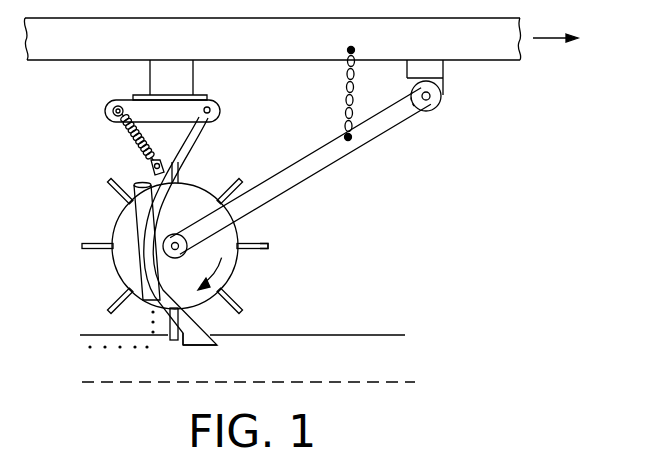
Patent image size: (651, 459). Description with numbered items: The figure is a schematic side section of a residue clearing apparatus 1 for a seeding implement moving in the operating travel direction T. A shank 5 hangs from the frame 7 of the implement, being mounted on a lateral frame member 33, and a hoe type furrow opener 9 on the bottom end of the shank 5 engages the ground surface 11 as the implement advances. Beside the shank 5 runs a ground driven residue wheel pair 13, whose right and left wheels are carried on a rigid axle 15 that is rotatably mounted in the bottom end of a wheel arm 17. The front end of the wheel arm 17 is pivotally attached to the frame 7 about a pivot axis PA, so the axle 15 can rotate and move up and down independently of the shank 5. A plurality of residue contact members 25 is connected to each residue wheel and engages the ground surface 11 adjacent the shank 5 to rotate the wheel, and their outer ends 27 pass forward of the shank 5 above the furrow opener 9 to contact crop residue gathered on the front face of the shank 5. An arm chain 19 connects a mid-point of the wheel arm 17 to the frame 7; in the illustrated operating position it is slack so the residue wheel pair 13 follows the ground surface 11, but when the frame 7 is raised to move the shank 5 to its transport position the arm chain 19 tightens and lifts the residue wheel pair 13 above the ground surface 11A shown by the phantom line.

The residue clearing apparatus 1 is at (316, 258).
The shank 5 is at (191, 134).
The frame 7 is at (500, 61).
The hoe type furrow opener 9 is at (203, 347).
The ground surface 11 is at (298, 334).
The ground surface (phantom line) 11A is at (393, 381).
The residue wheel pair 13 is at (232, 278).
The axle 15 is at (175, 236).
The wheel arm 17 is at (373, 142).
The arm chain 19 is at (345, 87).
The residue contact member 25 is at (253, 241).
The outer end 27 is at (270, 247).
The lateral frame member 33 is at (150, 75).
The pivot axis PA is at (439, 100).
The operating travel direction T is at (565, 42).